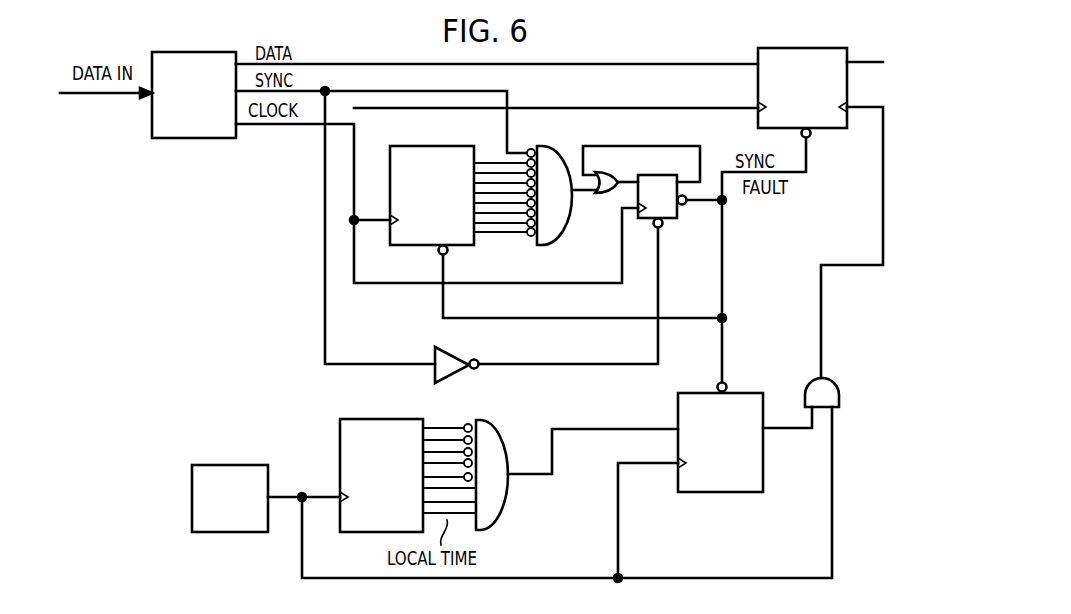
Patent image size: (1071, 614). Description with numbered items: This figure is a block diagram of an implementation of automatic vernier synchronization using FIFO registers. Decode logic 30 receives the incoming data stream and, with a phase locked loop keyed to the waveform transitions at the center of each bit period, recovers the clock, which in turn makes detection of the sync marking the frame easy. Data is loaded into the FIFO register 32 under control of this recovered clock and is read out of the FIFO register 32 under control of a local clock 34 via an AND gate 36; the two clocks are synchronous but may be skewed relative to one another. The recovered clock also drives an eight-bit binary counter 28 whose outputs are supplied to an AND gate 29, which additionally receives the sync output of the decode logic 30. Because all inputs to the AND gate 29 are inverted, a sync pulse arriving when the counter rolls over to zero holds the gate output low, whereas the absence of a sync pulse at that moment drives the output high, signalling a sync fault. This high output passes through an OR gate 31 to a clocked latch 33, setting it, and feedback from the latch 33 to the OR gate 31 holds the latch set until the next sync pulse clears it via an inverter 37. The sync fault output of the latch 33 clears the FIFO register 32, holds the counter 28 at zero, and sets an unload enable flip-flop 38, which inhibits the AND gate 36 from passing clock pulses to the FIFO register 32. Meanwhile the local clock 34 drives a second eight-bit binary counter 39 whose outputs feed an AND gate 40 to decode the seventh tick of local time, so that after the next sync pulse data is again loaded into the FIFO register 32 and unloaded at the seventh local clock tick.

The decode logic 30 is at (197, 139).
The 8-bit binary counter 28 is at (389, 172).
The AND gate 29 is at (557, 242).
The OR gate 31 is at (600, 195).
The clocked latch 33 is at (672, 220).
The FIFO register 32 is at (832, 129).
The inverter 37 is at (457, 353).
The local clock 34 is at (230, 464).
The second 8-bit binary counter 39 is at (380, 418).
The AND gate 40 is at (496, 426).
The unload enable flip-flop 38 is at (730, 393).
The AND gate 36 is at (836, 384).